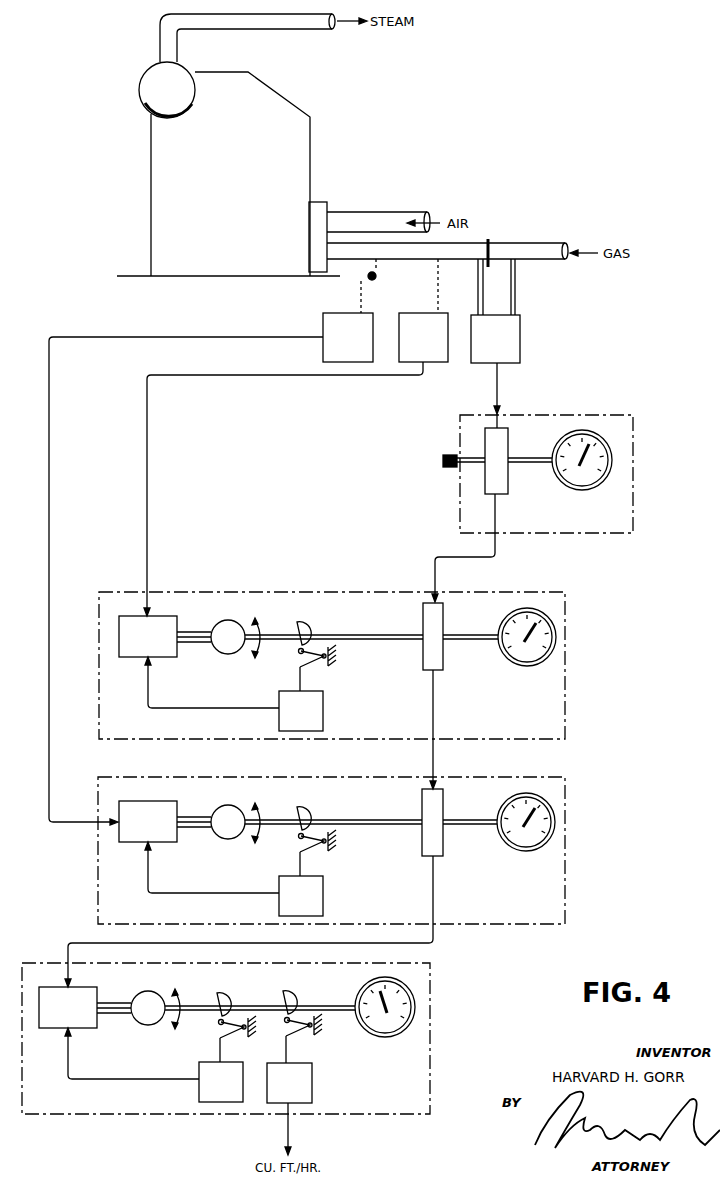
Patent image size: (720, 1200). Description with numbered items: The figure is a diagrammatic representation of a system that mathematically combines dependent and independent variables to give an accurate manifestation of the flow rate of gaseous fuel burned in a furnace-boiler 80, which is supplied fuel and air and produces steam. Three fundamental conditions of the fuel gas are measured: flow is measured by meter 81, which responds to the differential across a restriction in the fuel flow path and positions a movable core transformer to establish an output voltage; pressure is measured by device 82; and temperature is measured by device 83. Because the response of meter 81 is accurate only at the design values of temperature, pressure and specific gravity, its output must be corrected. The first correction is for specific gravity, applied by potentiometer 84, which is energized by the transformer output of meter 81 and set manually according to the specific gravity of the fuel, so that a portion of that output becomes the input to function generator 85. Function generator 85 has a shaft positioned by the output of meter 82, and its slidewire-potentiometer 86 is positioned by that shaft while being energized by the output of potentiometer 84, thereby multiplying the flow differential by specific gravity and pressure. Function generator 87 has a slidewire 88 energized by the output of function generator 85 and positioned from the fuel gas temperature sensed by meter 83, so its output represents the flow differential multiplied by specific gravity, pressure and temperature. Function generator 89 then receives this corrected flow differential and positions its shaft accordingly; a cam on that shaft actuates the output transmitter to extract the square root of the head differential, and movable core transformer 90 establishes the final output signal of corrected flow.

The furnace-boiler 80 is at (242, 208).
The flow meter 81 is at (520, 323).
The pressure measuring device 82 is at (423, 313).
The temperature measuring device 83 is at (323, 318).
The potentiometer 84 is at (508, 488).
The function generator 85 is at (565, 665).
The slidewire-potentiometer 86 is at (423, 620).
The function generator 87 is at (565, 840).
The slidewire 88 is at (422, 805).
The function generator 89 is at (430, 998).
The movable core transformer 90 is at (312, 1075).